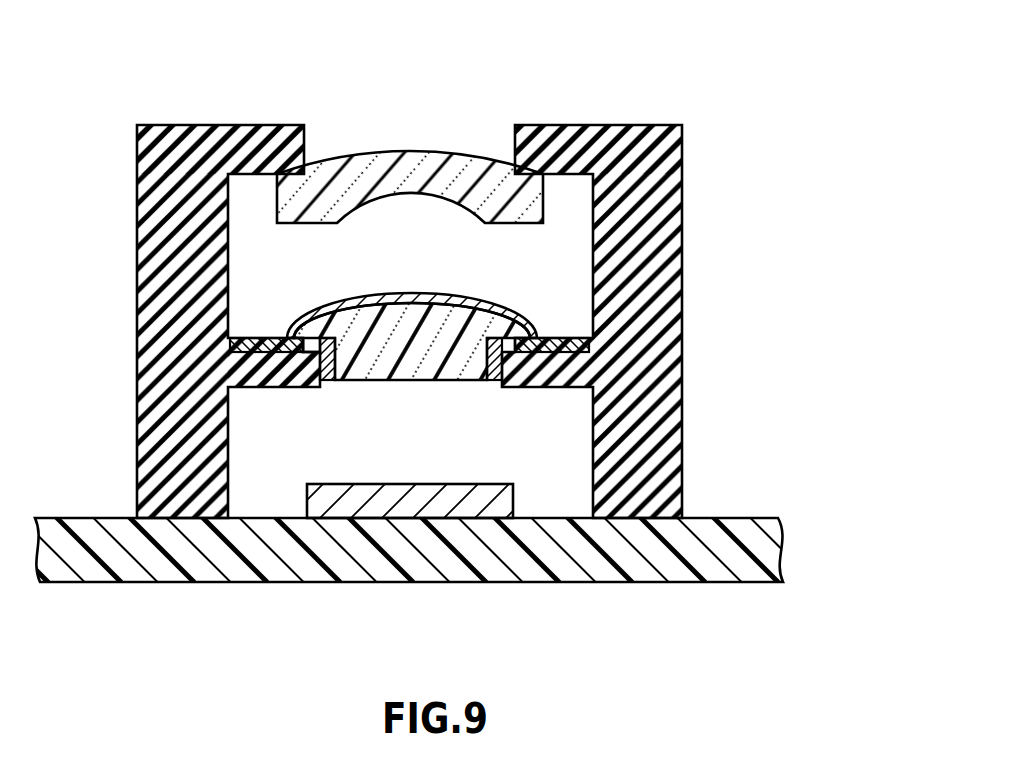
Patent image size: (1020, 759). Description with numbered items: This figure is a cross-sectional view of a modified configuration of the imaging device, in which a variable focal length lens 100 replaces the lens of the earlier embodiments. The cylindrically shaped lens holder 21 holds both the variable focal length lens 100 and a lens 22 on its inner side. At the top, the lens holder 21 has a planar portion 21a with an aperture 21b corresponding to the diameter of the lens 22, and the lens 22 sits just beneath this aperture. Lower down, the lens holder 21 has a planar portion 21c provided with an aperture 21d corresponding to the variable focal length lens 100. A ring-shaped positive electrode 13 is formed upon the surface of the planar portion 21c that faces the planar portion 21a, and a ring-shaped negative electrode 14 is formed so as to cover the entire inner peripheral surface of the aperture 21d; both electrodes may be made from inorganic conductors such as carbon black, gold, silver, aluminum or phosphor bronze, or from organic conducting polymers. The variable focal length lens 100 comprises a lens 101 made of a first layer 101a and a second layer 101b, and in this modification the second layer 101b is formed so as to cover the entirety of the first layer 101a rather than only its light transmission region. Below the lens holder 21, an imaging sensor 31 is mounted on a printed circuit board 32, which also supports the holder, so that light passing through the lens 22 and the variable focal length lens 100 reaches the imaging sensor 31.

The lens holder 21 is at (167, 185).
The planar portion 21a is at (263, 132).
The aperture 21b is at (515, 150).
The planar portion 21c is at (253, 378).
The aperture 21d is at (309, 346).
The lens 22 is at (393, 152).
The variable focal length lens 100 is at (567, 287).
The lens 101 is at (561, 278).
The first layer 101a is at (523, 318).
The second layer 101b is at (487, 297).
The positive electrode 13 is at (580, 339).
The negative electrode 14 is at (493, 368).
The imaging sensor 31 is at (360, 501).
The printed circuit board 32 is at (193, 565).